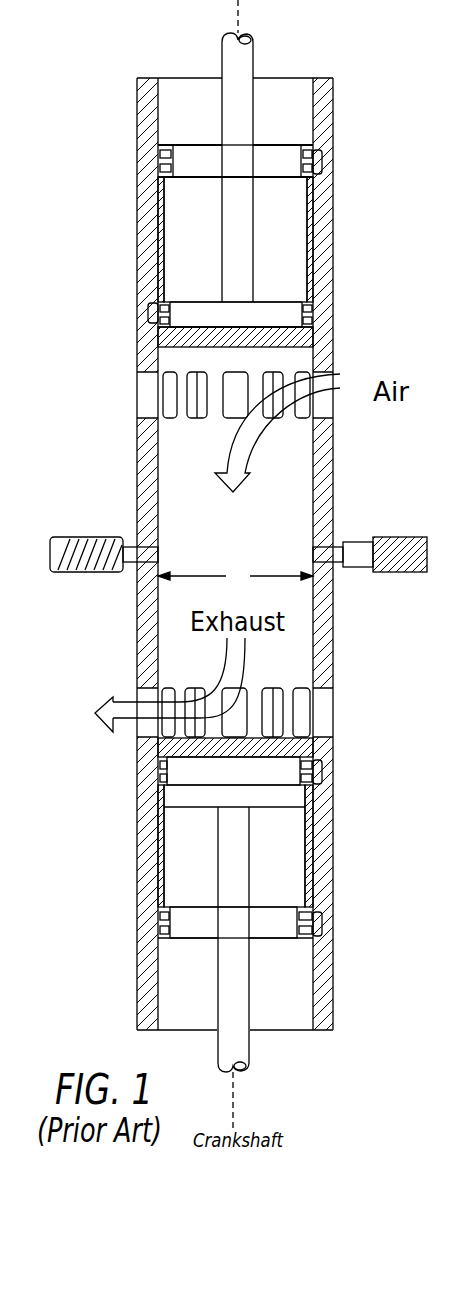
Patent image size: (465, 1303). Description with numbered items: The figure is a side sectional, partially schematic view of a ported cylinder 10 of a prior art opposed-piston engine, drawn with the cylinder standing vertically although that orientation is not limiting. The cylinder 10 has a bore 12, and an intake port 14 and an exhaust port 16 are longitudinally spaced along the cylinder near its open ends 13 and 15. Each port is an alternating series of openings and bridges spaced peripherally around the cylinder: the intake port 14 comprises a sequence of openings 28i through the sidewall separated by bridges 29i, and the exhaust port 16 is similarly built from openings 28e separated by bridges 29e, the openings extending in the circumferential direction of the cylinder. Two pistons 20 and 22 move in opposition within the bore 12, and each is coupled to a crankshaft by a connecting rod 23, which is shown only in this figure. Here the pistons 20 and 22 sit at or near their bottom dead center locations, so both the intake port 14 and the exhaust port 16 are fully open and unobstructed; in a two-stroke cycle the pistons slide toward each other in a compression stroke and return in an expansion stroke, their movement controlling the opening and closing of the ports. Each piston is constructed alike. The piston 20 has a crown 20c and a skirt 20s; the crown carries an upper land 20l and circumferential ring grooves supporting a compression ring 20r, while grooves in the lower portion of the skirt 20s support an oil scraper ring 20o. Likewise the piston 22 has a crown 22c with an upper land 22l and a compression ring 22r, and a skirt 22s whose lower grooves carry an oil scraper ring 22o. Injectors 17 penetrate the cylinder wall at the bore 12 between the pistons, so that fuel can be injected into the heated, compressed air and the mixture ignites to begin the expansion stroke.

The cylinder 10 is at (335, 468).
The bore 12 is at (246, 531).
The open end 13 is at (287, 64).
The intake port 14 is at (352, 371).
The open end 15 is at (282, 1042).
The exhaust port 16 is at (350, 705).
The injectors 17 is at (86, 536).
The piston 20 is at (241, 193).
The oil scraper ring 20o is at (322, 165).
The compression ring 20r is at (150, 313).
The skirt 20s is at (315, 285).
The crown 20c is at (300, 350).
The upper land 20l is at (157, 337).
The piston 22 is at (255, 873).
The crown 22c is at (290, 737).
The upper land 22l is at (322, 757).
The compression ring 22r is at (322, 772).
The skirt 22s is at (313, 862).
The oil scraper ring 22o is at (322, 922).
The connecting rod 23 is at (230, 237).
The openings 28i is at (188, 400).
The bridges 29i is at (166, 397).
The openings 28e is at (268, 705).
The bridges 29e is at (290, 698).